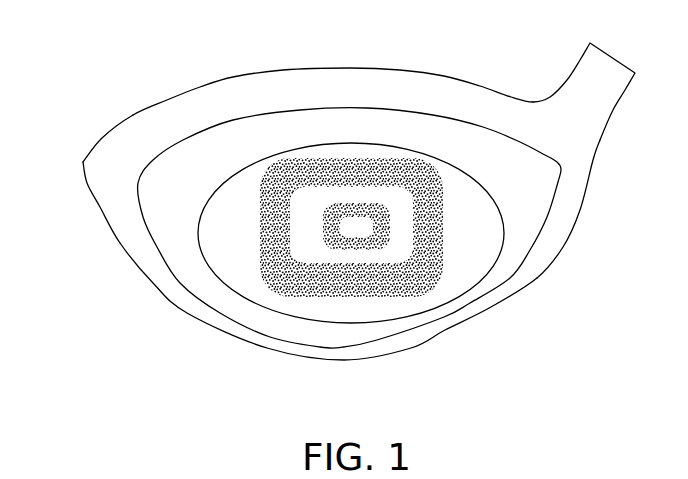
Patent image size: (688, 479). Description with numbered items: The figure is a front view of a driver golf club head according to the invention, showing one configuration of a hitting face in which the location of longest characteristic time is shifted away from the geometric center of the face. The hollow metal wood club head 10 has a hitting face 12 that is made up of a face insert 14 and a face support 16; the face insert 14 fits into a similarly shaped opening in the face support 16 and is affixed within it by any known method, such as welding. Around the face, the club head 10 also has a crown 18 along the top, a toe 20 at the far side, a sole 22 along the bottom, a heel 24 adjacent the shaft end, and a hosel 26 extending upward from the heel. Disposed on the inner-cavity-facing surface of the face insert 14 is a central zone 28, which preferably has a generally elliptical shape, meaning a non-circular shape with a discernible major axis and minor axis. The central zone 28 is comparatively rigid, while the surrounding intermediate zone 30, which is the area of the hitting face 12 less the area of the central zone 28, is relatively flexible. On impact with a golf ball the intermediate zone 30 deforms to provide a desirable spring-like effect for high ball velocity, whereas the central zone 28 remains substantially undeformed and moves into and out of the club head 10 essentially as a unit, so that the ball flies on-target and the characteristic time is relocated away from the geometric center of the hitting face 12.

The hollow metal wood club head 10 is at (77, 62).
The hitting face 12 is at (160, 215).
The face insert 14 is at (227, 267).
The face support 16 is at (515, 258).
The crown 18 is at (332, 68).
The toe 20 is at (83, 163).
The sole 22 is at (275, 350).
The heel 24 is at (580, 212).
The hosel 26 is at (603, 98).
The central zone 28 is at (431, 283).
The intermediate zone 30 is at (462, 190).